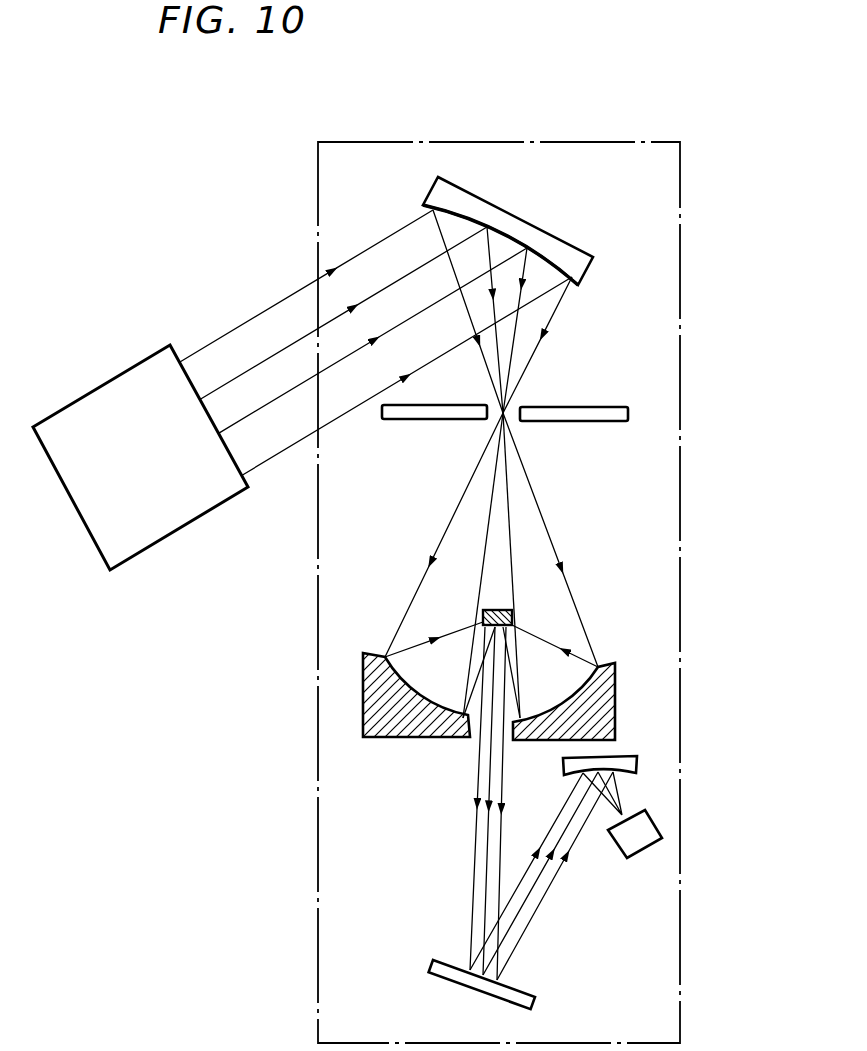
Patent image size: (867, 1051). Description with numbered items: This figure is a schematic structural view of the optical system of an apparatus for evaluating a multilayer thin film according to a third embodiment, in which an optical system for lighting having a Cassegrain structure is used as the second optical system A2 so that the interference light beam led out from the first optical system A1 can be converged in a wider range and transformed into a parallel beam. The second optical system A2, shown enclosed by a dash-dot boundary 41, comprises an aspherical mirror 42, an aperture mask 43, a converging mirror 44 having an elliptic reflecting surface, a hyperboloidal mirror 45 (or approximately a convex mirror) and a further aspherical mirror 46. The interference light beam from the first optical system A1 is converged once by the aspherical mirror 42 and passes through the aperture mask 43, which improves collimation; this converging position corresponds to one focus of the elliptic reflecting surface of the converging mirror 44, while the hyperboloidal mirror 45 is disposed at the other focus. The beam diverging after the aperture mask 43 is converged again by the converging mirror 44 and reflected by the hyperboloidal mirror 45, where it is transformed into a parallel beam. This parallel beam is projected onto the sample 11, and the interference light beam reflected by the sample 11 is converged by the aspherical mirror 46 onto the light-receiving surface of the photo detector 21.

The first optical system A1 is at (107, 382).
The second optical system A2 is at (556, 592).
The housing 41 is at (681, 270).
The aspherical mirror 42 is at (548, 230).
The aperture mask 43 is at (585, 405).
The converging mirror 44 is at (600, 702).
The hyperboloidal mirror 45 is at (512, 610).
The aspherical mirror 46 is at (618, 757).
The photo detector 21 is at (650, 850).
The sample 11 is at (477, 990).